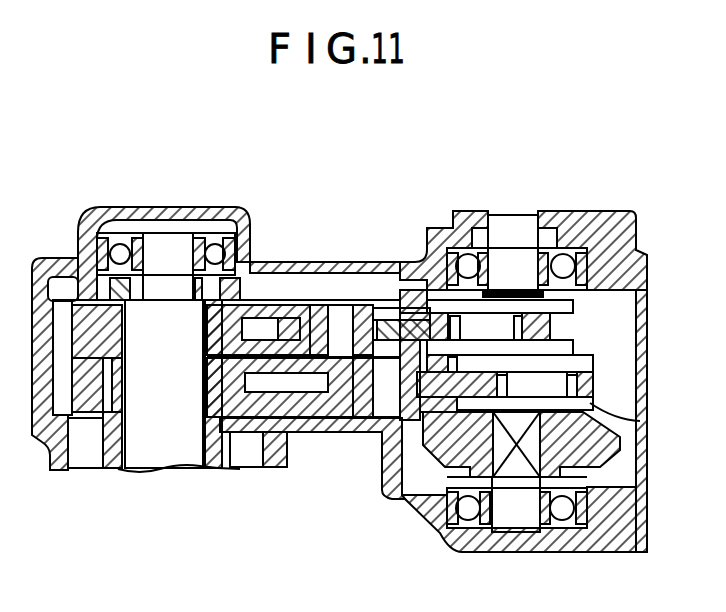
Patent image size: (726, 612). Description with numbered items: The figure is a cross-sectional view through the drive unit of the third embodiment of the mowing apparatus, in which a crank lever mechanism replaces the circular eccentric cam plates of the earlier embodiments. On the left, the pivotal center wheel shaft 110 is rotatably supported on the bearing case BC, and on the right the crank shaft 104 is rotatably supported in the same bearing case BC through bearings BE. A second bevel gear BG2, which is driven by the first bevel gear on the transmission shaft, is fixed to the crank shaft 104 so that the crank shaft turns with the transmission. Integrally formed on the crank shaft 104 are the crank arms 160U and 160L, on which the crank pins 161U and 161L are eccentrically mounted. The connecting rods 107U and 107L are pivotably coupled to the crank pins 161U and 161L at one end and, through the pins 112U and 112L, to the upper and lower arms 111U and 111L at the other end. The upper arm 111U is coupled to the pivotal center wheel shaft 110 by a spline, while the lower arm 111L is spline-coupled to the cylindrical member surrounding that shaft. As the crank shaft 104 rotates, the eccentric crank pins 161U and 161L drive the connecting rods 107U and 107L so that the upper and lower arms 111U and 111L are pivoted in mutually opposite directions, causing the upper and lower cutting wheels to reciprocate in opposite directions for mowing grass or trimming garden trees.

The bearing case BC is at (283, 262).
The bearings BE is at (118, 250).
The pivotal center wheel shaft 110 is at (146, 456).
The upper arm 111U is at (271, 309).
The lower arm 111L is at (268, 403).
The upper pin 112U is at (320, 305).
The lower pin 112L is at (367, 403).
The upper connecting rod 107U is at (400, 323).
The lower connecting rod 107L is at (382, 412).
The crank shaft 104 is at (514, 243).
The upper crank arm 160U is at (505, 305).
The lower crank arm 160L is at (640, 421).
The upper crank pin 161U is at (500, 327).
The lower crank pin 161L is at (568, 382).
The second bevel gear BG2 is at (443, 448).